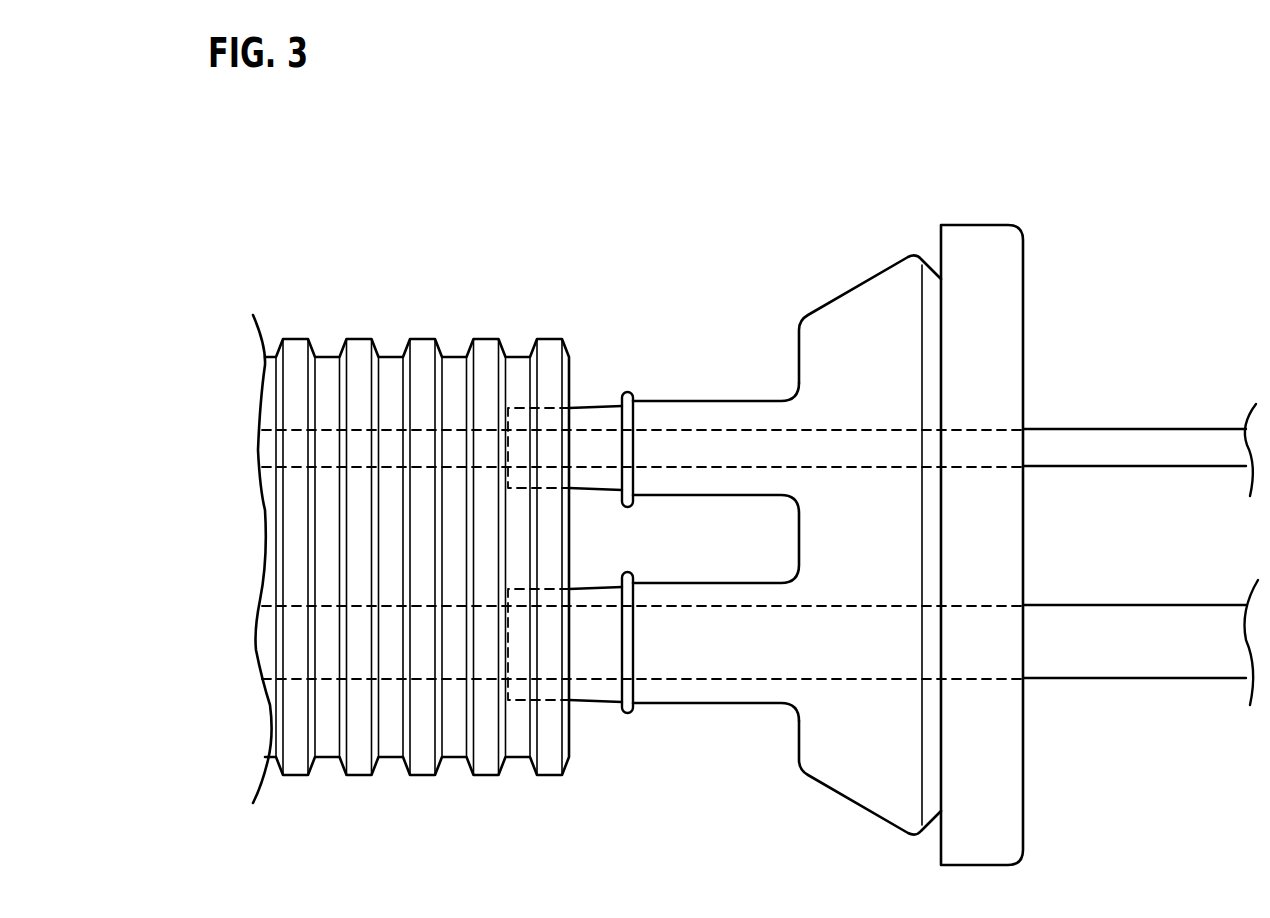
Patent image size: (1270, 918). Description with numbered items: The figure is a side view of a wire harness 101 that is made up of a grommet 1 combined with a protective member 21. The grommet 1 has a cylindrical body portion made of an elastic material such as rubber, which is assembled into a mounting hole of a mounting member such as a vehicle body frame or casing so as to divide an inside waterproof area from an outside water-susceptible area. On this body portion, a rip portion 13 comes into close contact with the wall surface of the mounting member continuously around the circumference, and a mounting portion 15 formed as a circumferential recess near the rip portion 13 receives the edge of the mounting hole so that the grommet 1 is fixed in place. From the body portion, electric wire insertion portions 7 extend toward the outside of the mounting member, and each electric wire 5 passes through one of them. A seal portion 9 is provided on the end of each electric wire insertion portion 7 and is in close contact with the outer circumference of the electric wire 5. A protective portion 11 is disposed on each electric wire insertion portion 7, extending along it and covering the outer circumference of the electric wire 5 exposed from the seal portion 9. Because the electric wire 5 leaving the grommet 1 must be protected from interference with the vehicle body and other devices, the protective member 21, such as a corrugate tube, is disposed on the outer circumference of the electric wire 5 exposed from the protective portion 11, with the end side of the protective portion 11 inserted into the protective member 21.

The wire harness 101 is at (682, 146).
The grommet 1 is at (791, 186).
The electric wire 5 is at (1138, 430).
The electric wire insertion portion 7 is at (723, 400).
The seal portion 9 is at (624, 392).
The protective portion 11 is at (593, 405).
The rip portion 13 is at (981, 241).
The mounting portion 15 is at (937, 276).
The protective member 21 is at (422, 338).